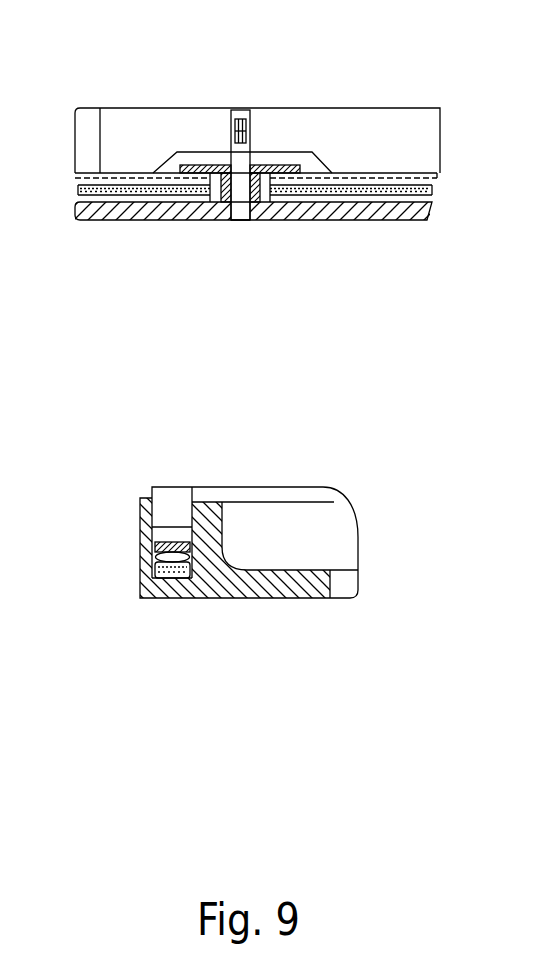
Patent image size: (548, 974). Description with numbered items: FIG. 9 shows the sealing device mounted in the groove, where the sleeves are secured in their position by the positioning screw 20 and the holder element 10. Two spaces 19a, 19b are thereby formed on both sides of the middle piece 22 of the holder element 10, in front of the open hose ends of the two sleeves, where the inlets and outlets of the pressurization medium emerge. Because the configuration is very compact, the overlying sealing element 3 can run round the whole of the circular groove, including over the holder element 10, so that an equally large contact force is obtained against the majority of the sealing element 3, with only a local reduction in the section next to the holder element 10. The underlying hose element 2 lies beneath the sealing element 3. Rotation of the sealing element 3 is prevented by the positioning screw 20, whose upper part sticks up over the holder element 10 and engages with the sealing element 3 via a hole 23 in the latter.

The hose element 2 is at (160, 200).
The sealing element 3 is at (337, 137).
The holder element 10 is at (197, 165).
The space 19a is at (273, 200).
The space 19b is at (215, 200).
The positioning screw 20 is at (238, 155).
The middle piece 22 is at (270, 223).
The hole 23 is at (243, 110).